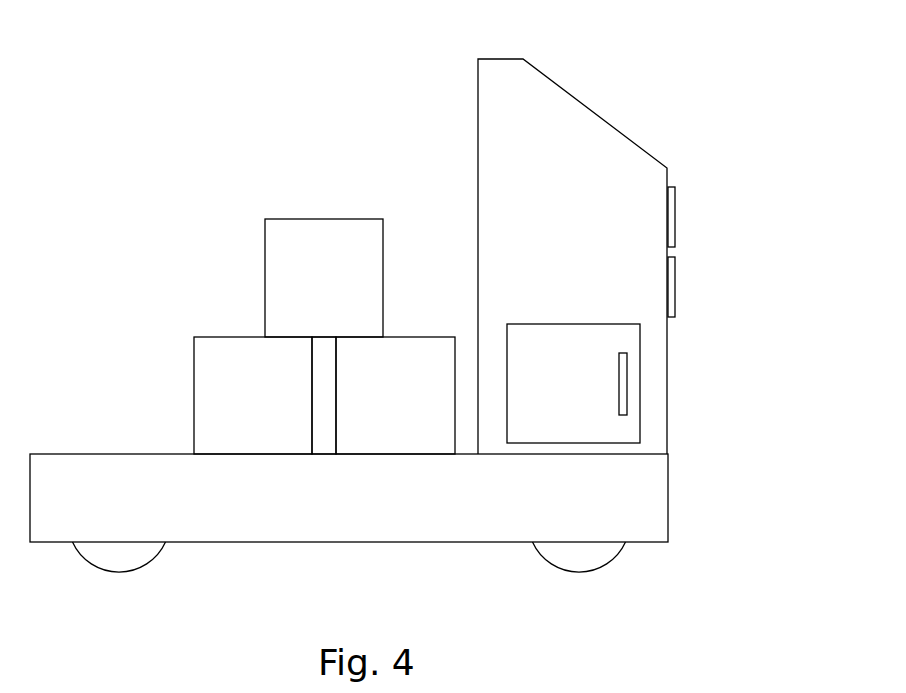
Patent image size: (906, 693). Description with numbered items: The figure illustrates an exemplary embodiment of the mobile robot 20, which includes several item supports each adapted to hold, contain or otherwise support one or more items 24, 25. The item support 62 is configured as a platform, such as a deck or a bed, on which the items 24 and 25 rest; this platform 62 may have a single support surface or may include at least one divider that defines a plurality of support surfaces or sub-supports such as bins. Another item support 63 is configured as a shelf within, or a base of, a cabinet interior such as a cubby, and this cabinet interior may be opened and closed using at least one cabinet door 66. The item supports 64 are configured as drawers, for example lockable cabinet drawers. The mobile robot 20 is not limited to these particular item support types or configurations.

The mobile robot 20 is at (654, 94).
The item 24 is at (324, 278).
The item 25 is at (324, 395).
The item support 62 is at (101, 454).
The item support 63 is at (654, 380).
The item supports 64 is at (675, 215).
The cabinet door 66 is at (628, 426).